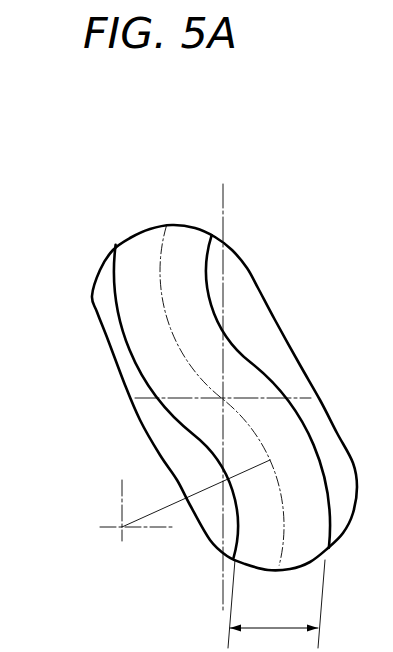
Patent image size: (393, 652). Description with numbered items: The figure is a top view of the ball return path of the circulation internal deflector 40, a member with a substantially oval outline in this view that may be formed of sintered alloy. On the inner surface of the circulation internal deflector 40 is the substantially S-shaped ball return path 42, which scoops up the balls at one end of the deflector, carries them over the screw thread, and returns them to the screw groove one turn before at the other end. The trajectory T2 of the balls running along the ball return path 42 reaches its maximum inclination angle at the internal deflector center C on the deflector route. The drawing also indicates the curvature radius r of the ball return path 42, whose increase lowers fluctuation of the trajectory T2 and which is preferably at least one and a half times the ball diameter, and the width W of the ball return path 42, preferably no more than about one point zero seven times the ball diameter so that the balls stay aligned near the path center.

The circulation internal deflector 40 is at (93, 268).
The ball return path 42 is at (137, 294).
The internal deflector center C is at (223, 397).
The curvature radius r is at (185, 500).
The trajectory T2 is at (172, 329).
The width W is at (276, 604).